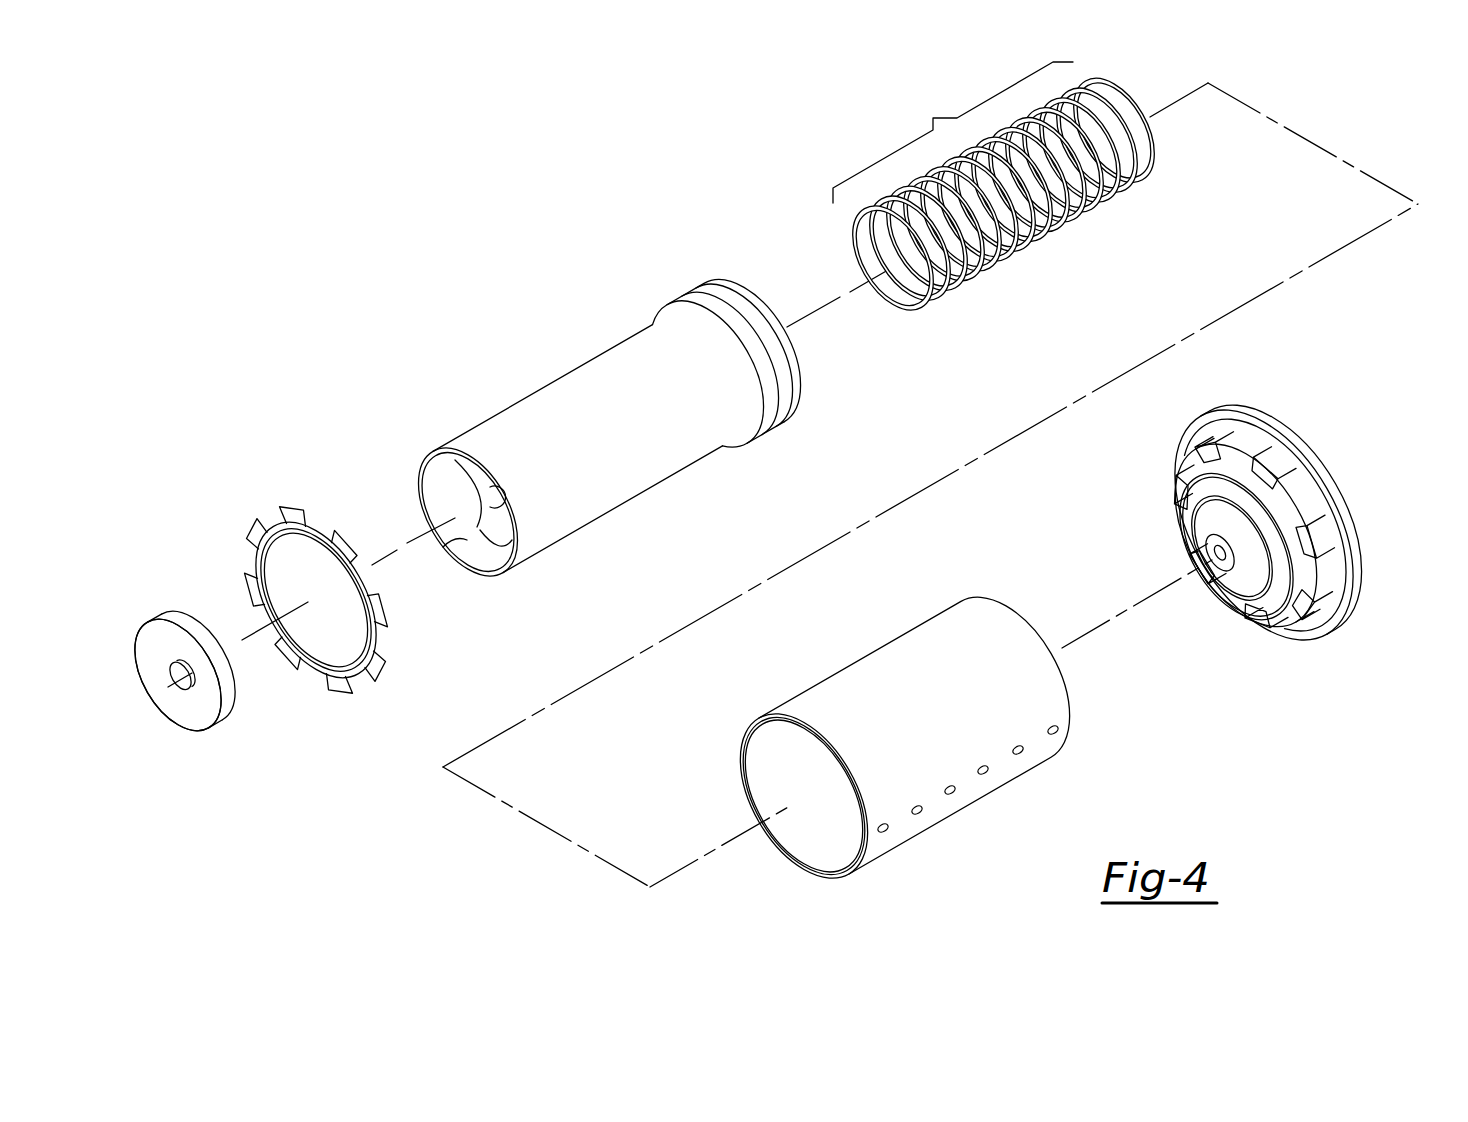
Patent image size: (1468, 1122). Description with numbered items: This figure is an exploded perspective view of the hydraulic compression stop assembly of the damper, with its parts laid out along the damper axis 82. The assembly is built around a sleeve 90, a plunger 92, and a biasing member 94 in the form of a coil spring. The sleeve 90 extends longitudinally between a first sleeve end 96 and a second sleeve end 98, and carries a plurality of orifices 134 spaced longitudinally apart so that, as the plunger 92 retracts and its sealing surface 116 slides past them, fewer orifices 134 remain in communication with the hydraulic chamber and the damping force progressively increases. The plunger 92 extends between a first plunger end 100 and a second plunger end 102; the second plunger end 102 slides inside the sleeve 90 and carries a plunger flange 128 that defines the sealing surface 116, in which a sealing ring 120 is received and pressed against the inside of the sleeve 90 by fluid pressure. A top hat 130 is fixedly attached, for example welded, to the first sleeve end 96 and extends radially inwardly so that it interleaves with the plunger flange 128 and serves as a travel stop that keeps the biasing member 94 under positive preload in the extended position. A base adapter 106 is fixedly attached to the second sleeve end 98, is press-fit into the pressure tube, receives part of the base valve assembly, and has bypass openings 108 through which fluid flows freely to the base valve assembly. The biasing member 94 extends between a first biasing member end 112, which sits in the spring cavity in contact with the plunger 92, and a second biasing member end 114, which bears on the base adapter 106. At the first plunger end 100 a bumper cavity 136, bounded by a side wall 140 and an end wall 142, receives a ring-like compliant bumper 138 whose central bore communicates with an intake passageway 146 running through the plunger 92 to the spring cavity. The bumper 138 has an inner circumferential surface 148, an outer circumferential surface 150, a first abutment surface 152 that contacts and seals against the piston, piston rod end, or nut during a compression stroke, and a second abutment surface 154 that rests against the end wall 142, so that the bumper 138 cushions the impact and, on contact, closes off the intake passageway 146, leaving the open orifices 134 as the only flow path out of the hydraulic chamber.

The damper axis 82 is at (683, 867).
The sleeve 90 is at (900, 683).
The plunger 92 is at (628, 368).
The biasing member 94 is at (953, 132).
The first sleeve end 96 is at (722, 745).
The second sleeve end 98 is at (1013, 606).
The first plunger end 100 is at (426, 452).
The second plunger end 102 is at (744, 280).
The base adapter 106 is at (1280, 418).
The bypass openings 108 is at (1230, 446).
The first biasing member end 112 is at (910, 324).
The second biasing member end 114 is at (1175, 152).
The sealing surface 116 is at (700, 292).
The sealing ring 120 is at (787, 388).
The plunger flange 128 is at (750, 440).
The top hat 130 is at (262, 527).
The orifices 134 is at (983, 765).
The bumper cavity 136 is at (449, 490).
The bumper 138 is at (223, 738).
The side wall 140 is at (467, 540).
The end wall 142 is at (487, 530).
The intake passageway 146 is at (492, 493).
The inner circumferential surface 148 is at (183, 683).
The outer circumferential surface 150 is at (228, 697).
The first abutment surface 152 is at (196, 618).
The second abutment surface 154 is at (152, 647).